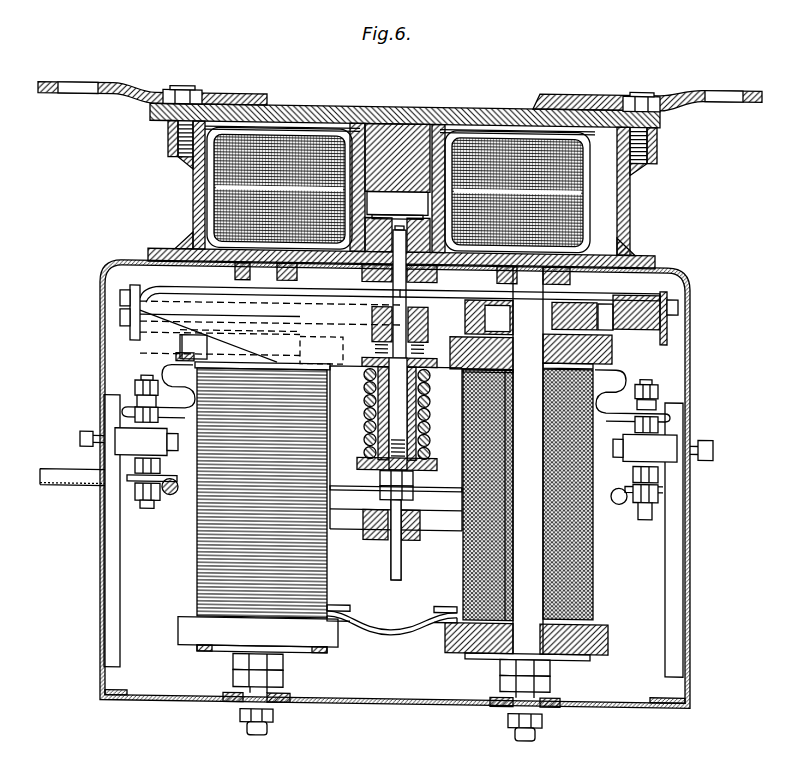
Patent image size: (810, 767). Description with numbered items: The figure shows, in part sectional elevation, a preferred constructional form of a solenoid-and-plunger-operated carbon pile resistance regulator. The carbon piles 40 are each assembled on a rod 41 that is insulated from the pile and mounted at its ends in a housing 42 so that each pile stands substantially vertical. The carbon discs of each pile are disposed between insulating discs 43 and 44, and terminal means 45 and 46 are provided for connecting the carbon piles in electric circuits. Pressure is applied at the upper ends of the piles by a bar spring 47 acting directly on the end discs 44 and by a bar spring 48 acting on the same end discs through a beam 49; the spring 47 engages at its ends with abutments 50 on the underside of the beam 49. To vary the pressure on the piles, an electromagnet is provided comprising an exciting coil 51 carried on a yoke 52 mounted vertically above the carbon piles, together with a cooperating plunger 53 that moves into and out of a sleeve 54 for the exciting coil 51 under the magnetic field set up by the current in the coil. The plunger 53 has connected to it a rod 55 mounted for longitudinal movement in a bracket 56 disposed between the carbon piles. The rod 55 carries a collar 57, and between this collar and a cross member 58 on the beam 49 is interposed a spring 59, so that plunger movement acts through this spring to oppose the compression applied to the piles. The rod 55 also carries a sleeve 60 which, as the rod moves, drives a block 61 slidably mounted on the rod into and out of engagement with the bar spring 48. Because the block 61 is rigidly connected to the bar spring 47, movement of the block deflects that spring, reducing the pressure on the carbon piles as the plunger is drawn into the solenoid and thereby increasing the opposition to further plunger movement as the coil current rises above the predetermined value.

The carbon pile 40 is at (205, 573).
The rod 41 is at (522, 636).
The housing 42 is at (642, 256).
The insulating disc 43 is at (602, 636).
The insulating disc 44 is at (607, 351).
The terminal means 45 is at (390, 630).
The terminal means 46 is at (620, 402).
The bar spring 47 is at (150, 337).
The bar spring 48 is at (608, 297).
The beam 49 is at (186, 333).
The abutment 50 is at (138, 296).
The exciting coil 51 is at (582, 166).
The yoke 52 is at (436, 108).
The plunger 53 is at (407, 230).
The sleeve 54 is at (362, 150).
The rod 55 is at (395, 425).
The bracket 56 is at (408, 518).
The collar 57 is at (432, 466).
The cross member 58 is at (431, 370).
The spring 59 is at (424, 413).
The sleeve 60 is at (378, 414).
The block 61 is at (428, 319).